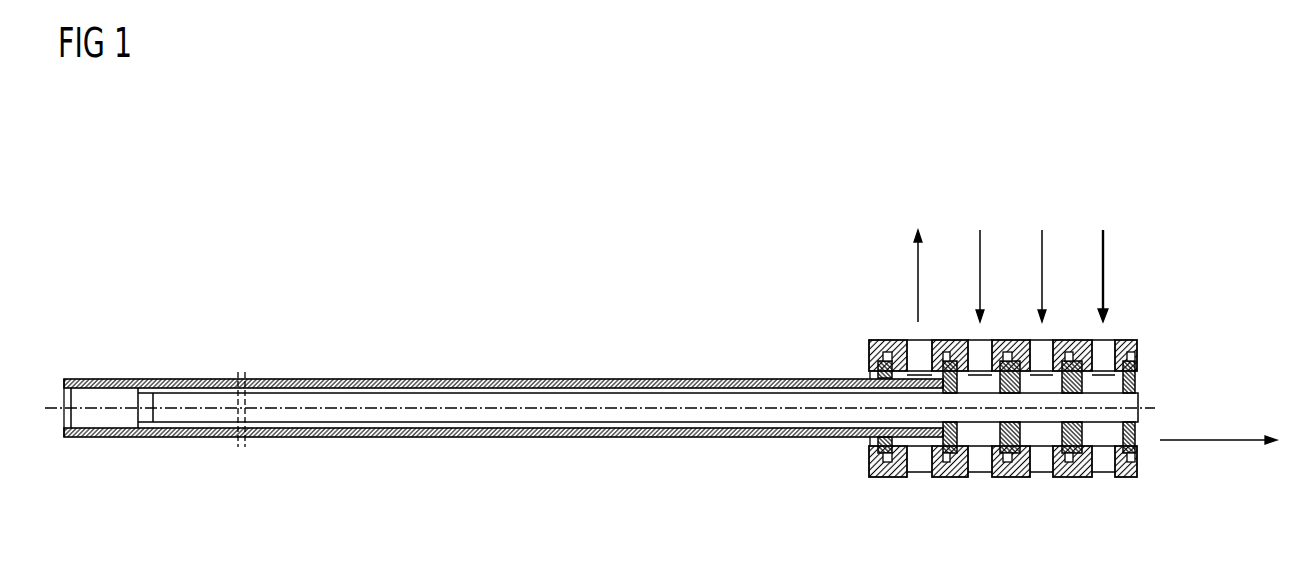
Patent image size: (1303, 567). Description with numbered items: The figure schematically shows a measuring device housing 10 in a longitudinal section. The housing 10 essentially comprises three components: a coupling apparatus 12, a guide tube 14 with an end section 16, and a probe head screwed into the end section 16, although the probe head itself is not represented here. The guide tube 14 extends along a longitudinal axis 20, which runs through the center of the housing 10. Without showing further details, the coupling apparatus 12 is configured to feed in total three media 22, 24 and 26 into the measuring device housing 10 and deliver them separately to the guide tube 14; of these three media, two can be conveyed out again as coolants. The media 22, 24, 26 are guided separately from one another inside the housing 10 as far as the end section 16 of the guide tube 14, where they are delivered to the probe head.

The measuring device housing 10 is at (820, 149).
The coupling apparatus 12 is at (1138, 217).
The guide tube 14 is at (845, 217).
The end section 16 is at (173, 365).
The longitudinal axis 20 is at (453, 407).
The medium 22 is at (920, 268).
The medium 24 is at (1044, 265).
The medium 26 is at (1105, 260).